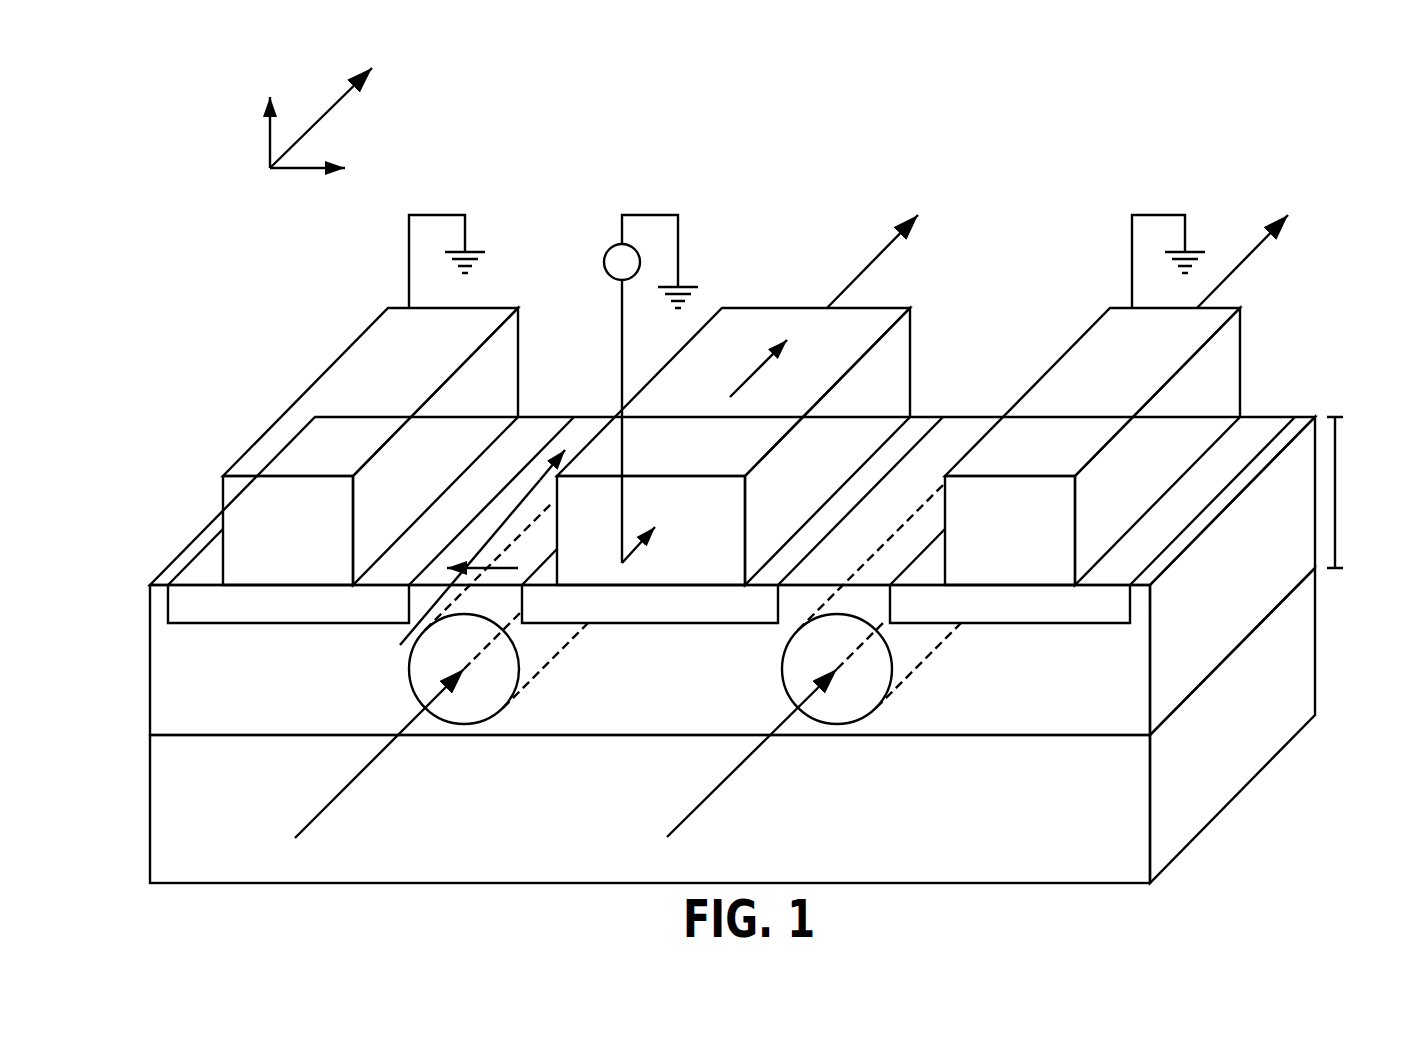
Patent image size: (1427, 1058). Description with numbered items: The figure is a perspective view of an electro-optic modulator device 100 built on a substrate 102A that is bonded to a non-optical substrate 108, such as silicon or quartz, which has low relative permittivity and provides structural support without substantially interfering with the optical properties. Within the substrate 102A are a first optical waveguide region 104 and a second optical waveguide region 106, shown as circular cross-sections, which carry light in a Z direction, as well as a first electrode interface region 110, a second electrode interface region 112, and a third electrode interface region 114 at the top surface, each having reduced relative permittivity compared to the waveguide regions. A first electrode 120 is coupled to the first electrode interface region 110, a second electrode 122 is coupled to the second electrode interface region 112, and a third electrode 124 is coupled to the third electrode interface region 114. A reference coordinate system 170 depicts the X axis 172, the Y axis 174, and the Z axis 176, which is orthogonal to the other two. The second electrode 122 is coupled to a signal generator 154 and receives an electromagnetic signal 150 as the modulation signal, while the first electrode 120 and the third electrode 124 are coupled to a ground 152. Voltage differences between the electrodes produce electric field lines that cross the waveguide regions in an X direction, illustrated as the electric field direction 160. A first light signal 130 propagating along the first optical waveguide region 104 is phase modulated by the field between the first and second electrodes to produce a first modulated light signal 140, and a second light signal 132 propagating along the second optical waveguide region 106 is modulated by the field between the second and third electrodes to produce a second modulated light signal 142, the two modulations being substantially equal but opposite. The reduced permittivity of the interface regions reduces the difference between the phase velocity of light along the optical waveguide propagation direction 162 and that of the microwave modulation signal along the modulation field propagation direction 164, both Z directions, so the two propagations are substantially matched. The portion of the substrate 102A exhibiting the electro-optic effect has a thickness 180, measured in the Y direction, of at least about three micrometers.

The electro-optic modulator device 100 is at (146, 289).
The substrate 102A is at (150, 662).
The first optical waveguide region 104 is at (408, 682).
The second optical waveguide region 106 is at (907, 675).
The non-optical substrate 108 is at (150, 778).
The first electrode interface region 110 is at (262, 625).
The second electrode interface region 112 is at (775, 625).
The third electrode interface region 114 is at (1077, 625).
The first electrode 120 is at (518, 365).
The second electrode 122 is at (910, 365).
The third electrode 124 is at (1240, 365).
The first light signal 130 is at (353, 780).
The second light signal 132 is at (724, 780).
The first modulated light signal 140 is at (860, 270).
The second modulated light signal 142 is at (1262, 245).
The electromagnetic signal 150 is at (624, 430).
The ground 152 is at (465, 225).
The signal generator 154 is at (605, 258).
The electric field direction 160 is at (398, 645).
The optical waveguide propagation direction 162 is at (540, 475).
The modulation field propagation direction 164 is at (757, 363).
The reference coordinate system 170 is at (278, 140).
The X axis 172 is at (298, 170).
The Y axis 174 is at (270, 125).
The Z axis 176 is at (338, 108).
The thickness 180 is at (1338, 508).